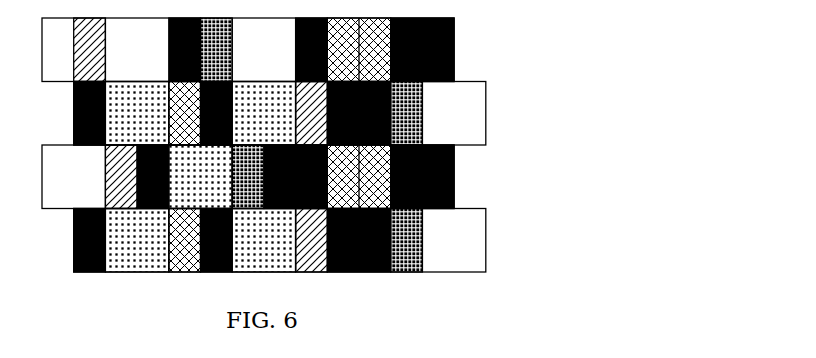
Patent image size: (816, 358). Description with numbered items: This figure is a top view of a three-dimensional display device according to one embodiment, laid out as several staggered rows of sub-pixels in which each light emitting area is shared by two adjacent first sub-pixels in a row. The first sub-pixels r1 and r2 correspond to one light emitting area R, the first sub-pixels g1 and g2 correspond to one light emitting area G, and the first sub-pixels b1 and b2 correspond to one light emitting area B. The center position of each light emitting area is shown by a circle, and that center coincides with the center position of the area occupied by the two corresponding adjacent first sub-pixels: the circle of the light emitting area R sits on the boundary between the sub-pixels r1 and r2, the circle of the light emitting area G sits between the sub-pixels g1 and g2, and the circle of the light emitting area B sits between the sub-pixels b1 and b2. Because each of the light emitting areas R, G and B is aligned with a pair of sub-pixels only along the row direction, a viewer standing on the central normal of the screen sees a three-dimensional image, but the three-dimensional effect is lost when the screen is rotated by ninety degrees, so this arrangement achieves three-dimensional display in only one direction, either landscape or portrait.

The light emitting area R is at (201, 137).
The light emitting area G is at (327, 137).
The light emitting area B is at (264, 137).
The first sub-pixel r1 is at (165, 148).
The first sub-pixel r2 is at (227, 148).
The first sub-pixel g1 is at (294, 148).
The first sub-pixel g2 is at (361, 148).
The first sub-pixel b1 is at (231, 148).
The first sub-pixel b2 is at (292, 148).